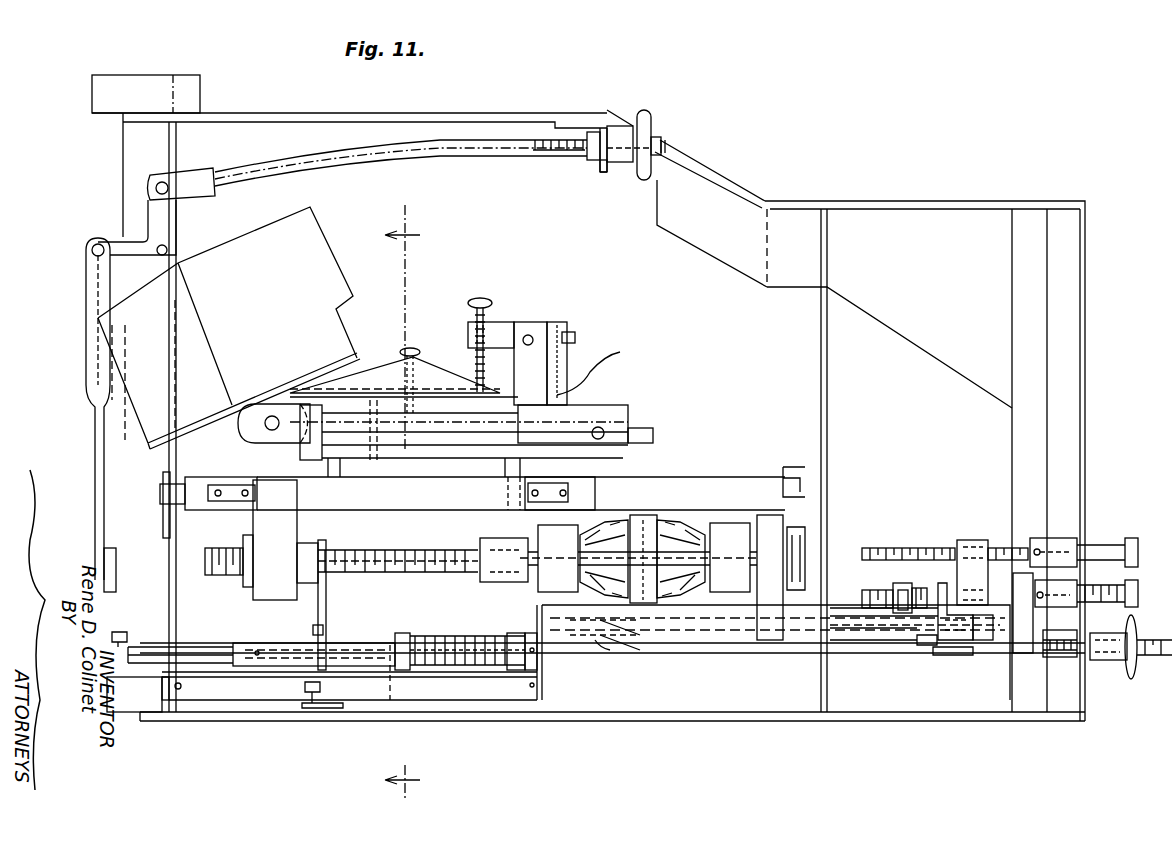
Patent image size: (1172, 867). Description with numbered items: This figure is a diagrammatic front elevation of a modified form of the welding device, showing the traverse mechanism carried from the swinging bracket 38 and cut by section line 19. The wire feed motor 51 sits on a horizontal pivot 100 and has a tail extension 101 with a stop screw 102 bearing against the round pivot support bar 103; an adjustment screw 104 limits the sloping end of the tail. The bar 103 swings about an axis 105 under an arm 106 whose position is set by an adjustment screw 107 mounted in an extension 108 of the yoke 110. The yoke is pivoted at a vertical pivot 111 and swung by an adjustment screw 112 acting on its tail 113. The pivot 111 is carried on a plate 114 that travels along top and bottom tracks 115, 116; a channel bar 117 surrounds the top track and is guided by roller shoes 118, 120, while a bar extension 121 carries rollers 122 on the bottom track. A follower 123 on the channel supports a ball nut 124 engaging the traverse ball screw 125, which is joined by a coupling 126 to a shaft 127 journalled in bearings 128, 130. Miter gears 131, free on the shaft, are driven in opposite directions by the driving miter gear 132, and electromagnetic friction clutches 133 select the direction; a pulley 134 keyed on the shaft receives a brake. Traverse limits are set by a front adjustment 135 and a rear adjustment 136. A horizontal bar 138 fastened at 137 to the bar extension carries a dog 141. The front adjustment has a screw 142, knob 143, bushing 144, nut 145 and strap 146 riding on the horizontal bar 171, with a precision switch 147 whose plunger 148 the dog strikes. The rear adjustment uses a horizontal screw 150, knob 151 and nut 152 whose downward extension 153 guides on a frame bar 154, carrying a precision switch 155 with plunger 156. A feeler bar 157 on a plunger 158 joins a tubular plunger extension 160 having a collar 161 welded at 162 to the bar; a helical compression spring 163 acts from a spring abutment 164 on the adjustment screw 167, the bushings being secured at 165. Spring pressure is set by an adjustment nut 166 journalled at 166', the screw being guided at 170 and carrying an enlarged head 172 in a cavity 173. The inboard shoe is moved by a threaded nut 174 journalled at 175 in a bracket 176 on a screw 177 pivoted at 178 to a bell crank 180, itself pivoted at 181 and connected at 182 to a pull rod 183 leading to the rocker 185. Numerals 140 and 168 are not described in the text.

The section line 19 is at (422, 502).
The swinging bracket 38 is at (458, 113).
The welding head (wire feed motor) 51 is at (227, 325).
The horizontal pivot 100 is at (272, 416).
The tail extension 101 is at (455, 375).
The adjustable stop screw 102 is at (410, 348).
The pivot support bar 103 is at (448, 432).
The adjustment screw 104 is at (478, 305).
The axis 105 is at (556, 405).
The arm 106 is at (607, 366).
The adjustment screw 107 is at (535, 340).
The extension of yoke 108 is at (548, 322).
The yoke 110 is at (438, 445).
The vertical pivot 111 is at (372, 430).
The adjustment screw 112 is at (602, 426).
The tail of yoke 113 is at (655, 438).
The plate 114 is at (318, 462).
The top track 115 is at (675, 477).
The bottom track 116 is at (540, 680).
The channel bar 117 is at (440, 550).
The roller shoe 118 is at (585, 480).
The roller shoe 120 is at (200, 477).
The bar extension 121 is at (328, 612).
The rollers 122 is at (310, 700).
The follower 123 is at (292, 528).
The nut 124 is at (308, 580).
The traverse ball screw 125 is at (405, 550).
The coupling 126 is at (500, 582).
The shaft 127 is at (810, 550).
The bearing 128 is at (805, 485).
The bearing 130 is at (655, 525).
The miter gears 131 is at (602, 528).
The driving miter gear 132 is at (660, 625).
The electromagnetic friction clutches 133 is at (640, 557).
The pulley 134 is at (785, 520).
The front adjustment 135 is at (1100, 548).
The rear adjustment 136 is at (1143, 589).
The fastening 137 is at (313, 633).
The horizontal bar 138 is at (490, 636).
The link 140 is at (615, 655).
The dog 141 is at (944, 583).
The screw 142 is at (900, 548).
The knob 143 is at (1130, 540).
The bushing 144 is at (1045, 538).
The nut 145 is at (970, 540).
The strap 146 is at (1050, 657).
The precision switch 147 is at (1022, 640).
The operating plunger 148 is at (1012, 550).
The horizontal screw 150 is at (871, 605).
The knob 151 is at (1128, 665).
The nut 152 is at (898, 590).
The downward extension 153 is at (922, 660).
The longitudinally extending bar 154 is at (920, 645).
The precision switch 155 is at (905, 628).
The plunger 156 is at (928, 580).
The feeler bar 157 is at (118, 632).
The plunger 158 is at (250, 650).
The tubular plunger extension 160 is at (295, 660).
The collar 161 is at (402, 672).
The weld 162 is at (403, 633).
The helical compression spring 163 is at (432, 636).
The spring abutment 164 is at (530, 670).
The securing point 165 is at (1048, 660).
The adjustment nut 166 is at (1118, 682).
The journal 166' is at (1071, 718).
The adjustment screw 167 is at (1108, 660).
The rod 168 is at (858, 643).
The guide 170 is at (538, 662).
The horizontal bar 171 is at (1020, 615).
The enlarged head 172 is at (388, 690).
The enlarged cavity 173 is at (360, 680).
The threaded nut 174 is at (620, 130).
The journal 175 is at (588, 160).
The bracket 176 is at (603, 172).
The screw 177 is at (662, 145).
The pivotal connection 178 is at (162, 182).
The bell crank 180 is at (170, 214).
The fixed pivot 181 is at (168, 250).
The pivotal connection 182 is at (99, 243).
The pull rod 183 is at (105, 405).
The rocker 185 is at (108, 562).